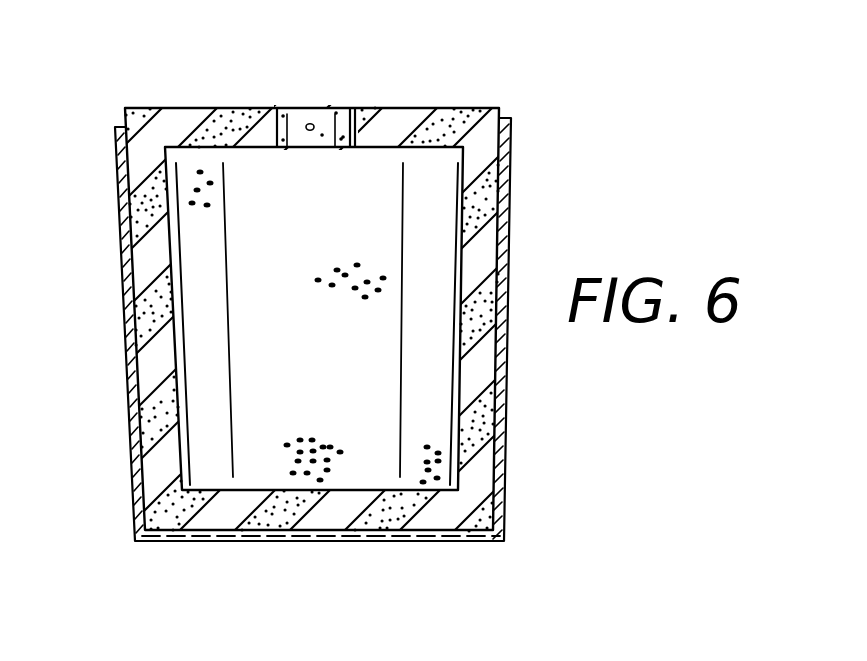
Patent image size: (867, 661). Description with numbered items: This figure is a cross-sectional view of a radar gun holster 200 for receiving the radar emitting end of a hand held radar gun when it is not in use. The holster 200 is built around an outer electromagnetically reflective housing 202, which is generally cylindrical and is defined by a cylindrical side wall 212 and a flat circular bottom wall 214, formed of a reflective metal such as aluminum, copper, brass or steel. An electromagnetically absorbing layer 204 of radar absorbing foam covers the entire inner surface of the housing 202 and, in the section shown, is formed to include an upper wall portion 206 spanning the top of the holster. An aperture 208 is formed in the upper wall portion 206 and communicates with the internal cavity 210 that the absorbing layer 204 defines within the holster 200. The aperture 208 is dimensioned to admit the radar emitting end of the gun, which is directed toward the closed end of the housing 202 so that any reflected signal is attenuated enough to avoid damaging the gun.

The radar gun holster 200 is at (533, 100).
The outer electromagnetically reflective housing 202 is at (510, 231).
The electromagnetically absorbing layer 204 is at (481, 250).
The upper wall portion 206 is at (437, 123).
The aperture 208 is at (318, 118).
The internal cavity 210 is at (245, 278).
The cylindrical side wall 212 is at (505, 435).
The flat circular bottom wall 214 is at (307, 540).